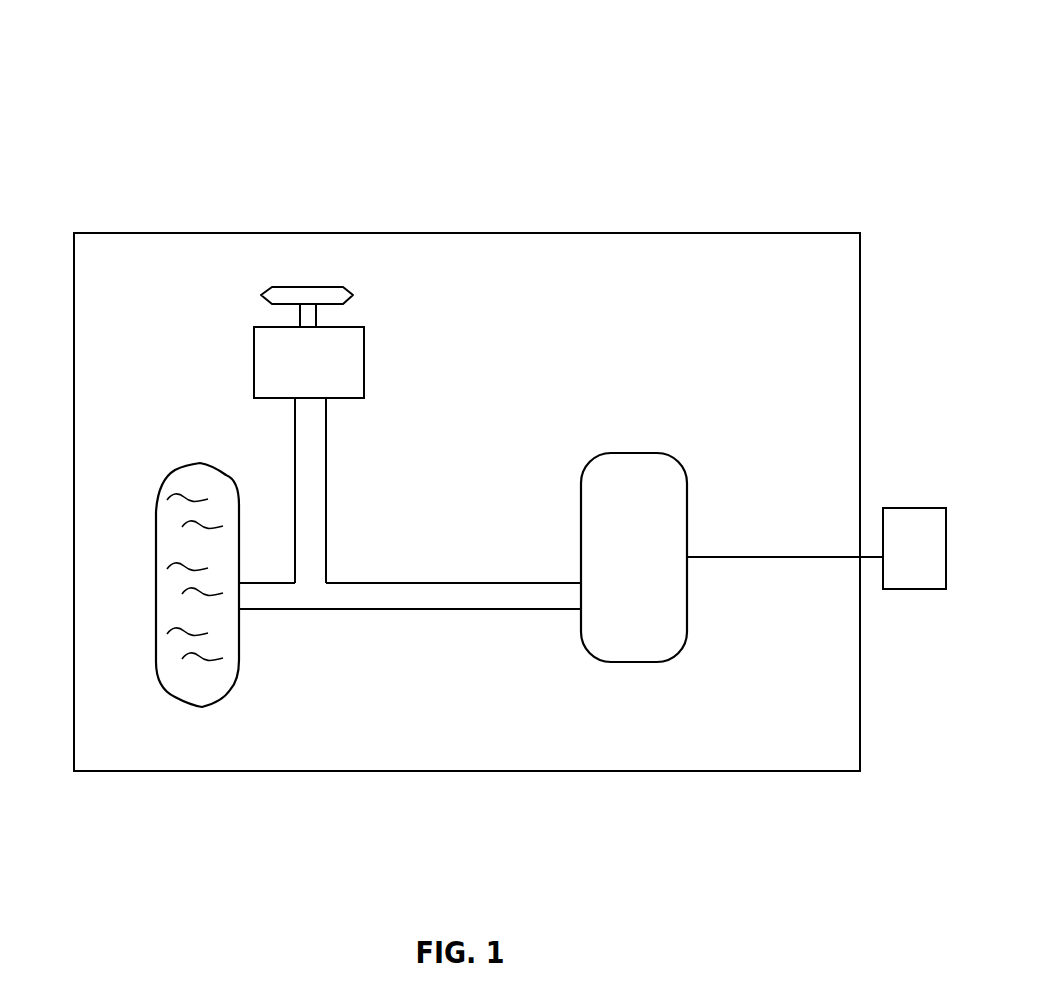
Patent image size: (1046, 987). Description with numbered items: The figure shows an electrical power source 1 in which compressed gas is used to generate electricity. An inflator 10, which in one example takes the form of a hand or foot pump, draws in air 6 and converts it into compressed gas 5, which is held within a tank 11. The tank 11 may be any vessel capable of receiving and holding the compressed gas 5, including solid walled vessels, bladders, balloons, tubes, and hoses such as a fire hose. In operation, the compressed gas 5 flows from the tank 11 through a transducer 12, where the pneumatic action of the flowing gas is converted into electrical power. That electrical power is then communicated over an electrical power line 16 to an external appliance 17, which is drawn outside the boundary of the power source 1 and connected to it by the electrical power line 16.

The power source 1 is at (449, 122).
The compressed gas 5 is at (182, 642).
The air 6 is at (775, 450).
The inflator 10 is at (270, 385).
The tank 11 is at (167, 483).
The transducer 12 is at (608, 512).
The electrical power line 16 is at (715, 557).
The external appliance 17 is at (922, 558).